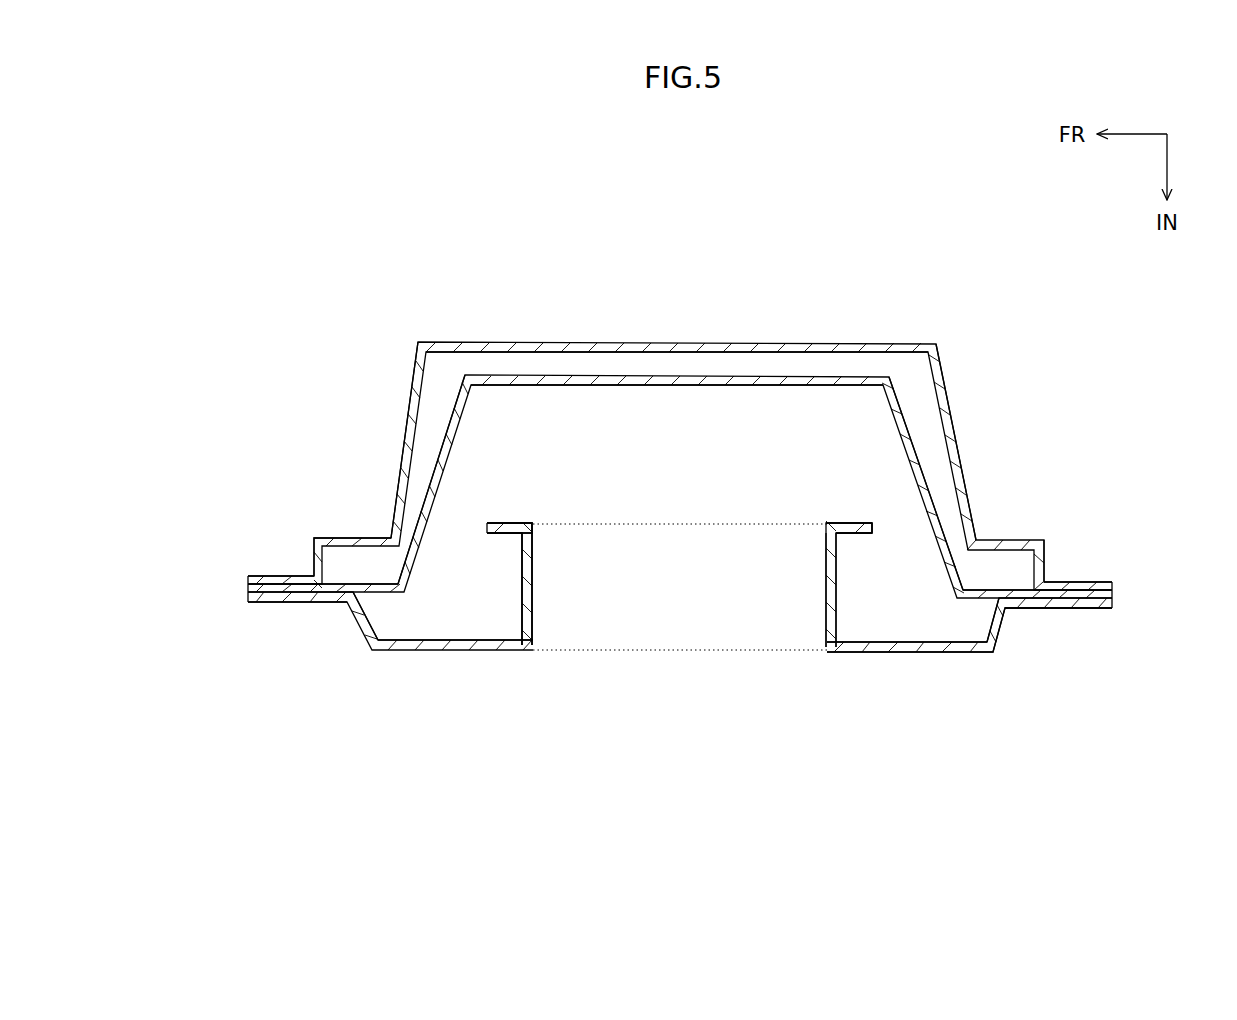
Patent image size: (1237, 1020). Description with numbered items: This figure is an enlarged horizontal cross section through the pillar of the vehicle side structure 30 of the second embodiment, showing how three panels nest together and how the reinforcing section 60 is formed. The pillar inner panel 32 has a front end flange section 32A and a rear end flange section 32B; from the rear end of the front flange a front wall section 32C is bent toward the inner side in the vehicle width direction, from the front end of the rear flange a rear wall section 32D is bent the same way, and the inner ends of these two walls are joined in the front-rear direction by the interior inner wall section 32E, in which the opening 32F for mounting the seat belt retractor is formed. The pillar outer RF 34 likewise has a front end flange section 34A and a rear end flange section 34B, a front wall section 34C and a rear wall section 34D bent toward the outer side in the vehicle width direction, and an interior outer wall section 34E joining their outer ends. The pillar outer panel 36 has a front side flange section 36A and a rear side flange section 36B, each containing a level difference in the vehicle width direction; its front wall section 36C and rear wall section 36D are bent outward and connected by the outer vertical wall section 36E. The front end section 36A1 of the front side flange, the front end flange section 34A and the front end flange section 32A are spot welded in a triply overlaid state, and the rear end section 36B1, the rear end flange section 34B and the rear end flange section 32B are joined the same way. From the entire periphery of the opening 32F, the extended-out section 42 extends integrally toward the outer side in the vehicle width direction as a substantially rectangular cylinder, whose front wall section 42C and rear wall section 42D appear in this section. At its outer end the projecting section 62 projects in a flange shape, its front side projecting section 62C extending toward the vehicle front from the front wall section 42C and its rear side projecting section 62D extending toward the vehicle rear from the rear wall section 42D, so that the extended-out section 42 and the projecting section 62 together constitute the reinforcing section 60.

The vehicle body structure 30 is at (987, 735).
The pillar inner panel 32 is at (913, 682).
The front end flange section 32A is at (285, 606).
The rear end flange section 32B is at (1072, 612).
The front wall section 32C is at (350, 614).
The rear wall section 32D is at (1013, 642).
The interior inner wall section 32E is at (450, 655).
The opening 32F is at (820, 655).
The pillar outer RF 34 is at (785, 374).
The front end flange section 34A is at (358, 533).
The rear end flange section 34B is at (1005, 540).
The front wall section 34C is at (470, 418).
The rear wall section 34D is at (893, 425).
The interior outer wall section 34E is at (683, 388).
The pillar outer panel 36 is at (883, 327).
The front side flange section 36A is at (313, 508).
The front end section 36A1 is at (285, 575).
The rear side flange section 36B is at (1044, 506).
The rear end section 36B1 is at (1082, 582).
The front wall section 36C is at (405, 412).
The rear wall section 36D is at (955, 415).
The outer vertical wall section 36E is at (683, 340).
The extended-out section 42 is at (520, 588).
The front wall section 42C is at (520, 606).
The rear wall section 42D is at (840, 572).
The reinforcing section 60 is at (516, 548).
The projecting section 62 is at (860, 516).
The front side projecting section 62C is at (505, 520).
The rear side projecting section 62D is at (848, 520).